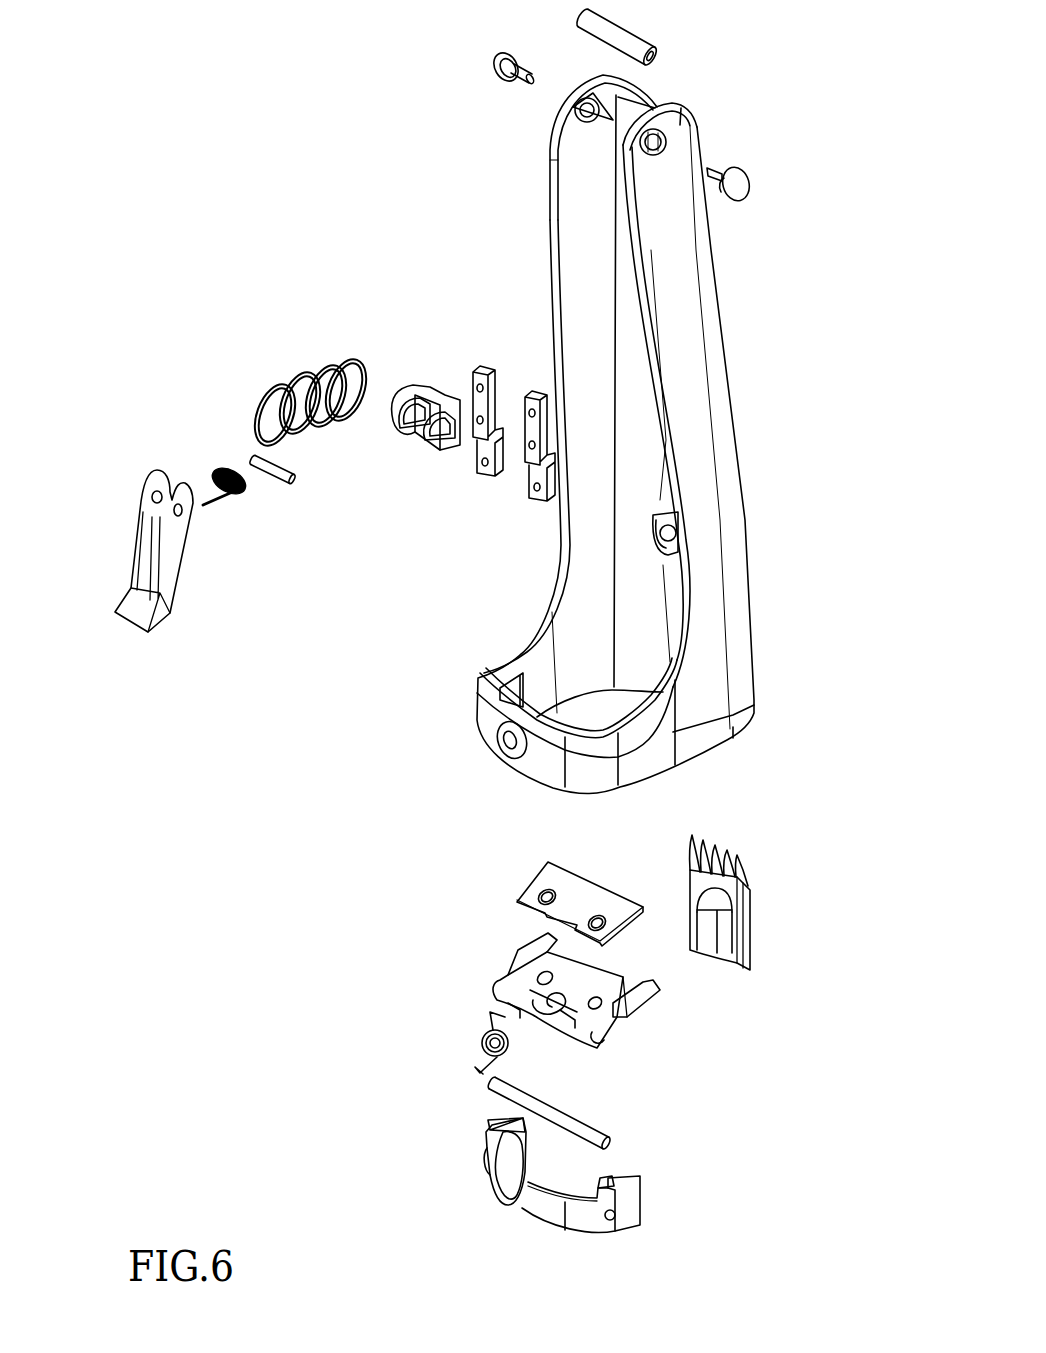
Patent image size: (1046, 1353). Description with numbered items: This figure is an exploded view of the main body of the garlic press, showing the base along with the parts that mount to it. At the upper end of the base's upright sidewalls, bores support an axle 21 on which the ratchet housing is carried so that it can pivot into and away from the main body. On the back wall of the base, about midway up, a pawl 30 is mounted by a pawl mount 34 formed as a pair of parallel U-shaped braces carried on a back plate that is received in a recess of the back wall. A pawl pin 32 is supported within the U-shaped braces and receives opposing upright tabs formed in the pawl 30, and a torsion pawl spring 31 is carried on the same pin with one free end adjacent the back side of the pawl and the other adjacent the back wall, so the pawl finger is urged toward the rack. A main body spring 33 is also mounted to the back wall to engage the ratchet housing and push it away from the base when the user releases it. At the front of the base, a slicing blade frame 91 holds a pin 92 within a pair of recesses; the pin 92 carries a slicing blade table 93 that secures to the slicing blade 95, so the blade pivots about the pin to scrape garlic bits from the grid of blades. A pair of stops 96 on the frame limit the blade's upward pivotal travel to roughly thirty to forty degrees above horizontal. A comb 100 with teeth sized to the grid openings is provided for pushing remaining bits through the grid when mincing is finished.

The axle 21 is at (623, 25).
The pawl 30 is at (135, 553).
The torsion pawl spring 31 is at (240, 494).
The pawl pin 32 is at (290, 460).
The main body spring 33 is at (302, 368).
The pawl mount 34 is at (442, 393).
The slicing blade frame 91 is at (485, 1168).
The pin 92 is at (590, 1117).
The slicing blade table 93 is at (505, 985).
The slicing blade 95 is at (553, 880).
The stops 96 is at (615, 1180).
The comb 100 is at (750, 932).